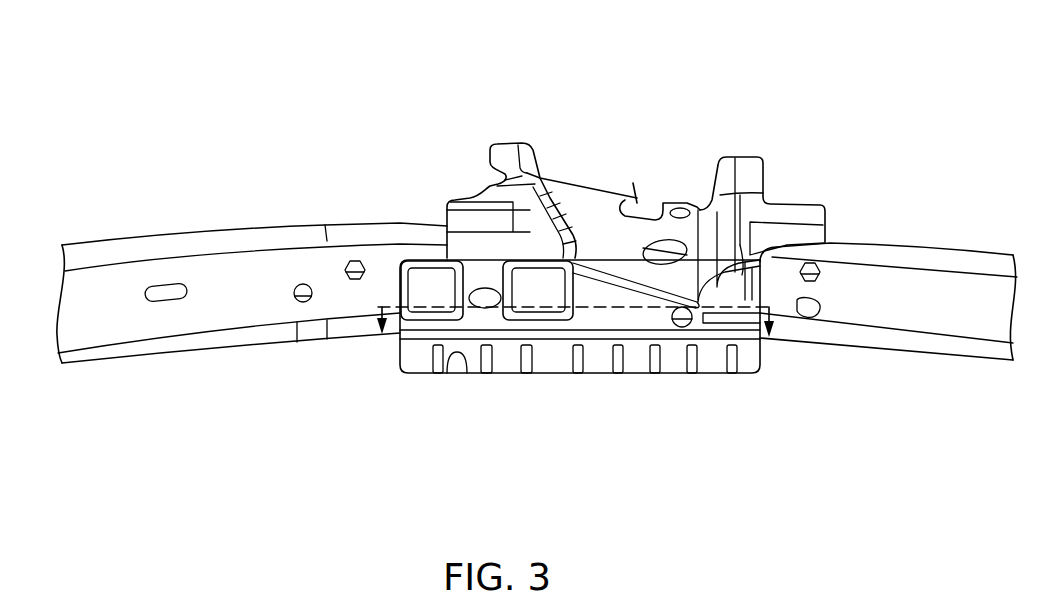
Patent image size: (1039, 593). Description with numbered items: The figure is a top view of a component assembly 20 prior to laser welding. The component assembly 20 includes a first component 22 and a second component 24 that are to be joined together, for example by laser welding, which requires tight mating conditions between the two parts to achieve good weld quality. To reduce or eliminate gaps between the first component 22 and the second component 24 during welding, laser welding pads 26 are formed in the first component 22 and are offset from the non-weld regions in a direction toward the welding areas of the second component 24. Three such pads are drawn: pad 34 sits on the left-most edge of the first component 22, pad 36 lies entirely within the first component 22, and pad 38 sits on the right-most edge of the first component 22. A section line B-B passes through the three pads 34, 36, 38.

The component assembly 20 is at (218, 98).
The first component 22 is at (418, 357).
The second component 24 is at (243, 292).
The laser welding pad 26 is at (433, 302).
The laser welding pad 34 is at (417, 283).
The laser welding pad 36 is at (532, 280).
The laser welding pad 38 is at (748, 290).